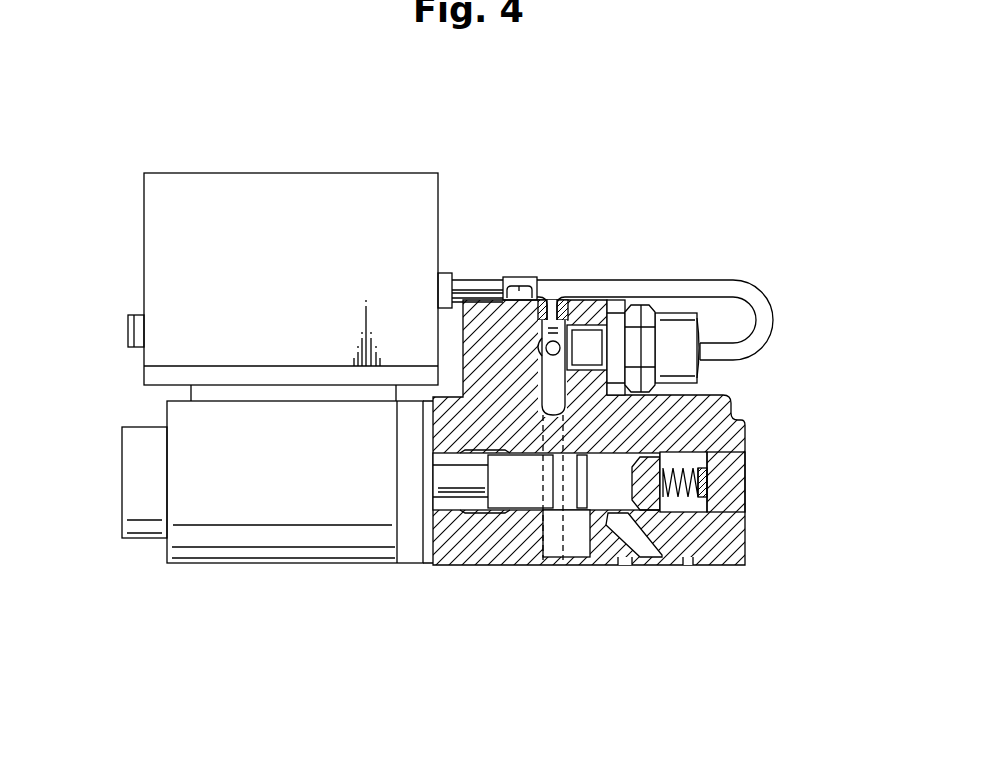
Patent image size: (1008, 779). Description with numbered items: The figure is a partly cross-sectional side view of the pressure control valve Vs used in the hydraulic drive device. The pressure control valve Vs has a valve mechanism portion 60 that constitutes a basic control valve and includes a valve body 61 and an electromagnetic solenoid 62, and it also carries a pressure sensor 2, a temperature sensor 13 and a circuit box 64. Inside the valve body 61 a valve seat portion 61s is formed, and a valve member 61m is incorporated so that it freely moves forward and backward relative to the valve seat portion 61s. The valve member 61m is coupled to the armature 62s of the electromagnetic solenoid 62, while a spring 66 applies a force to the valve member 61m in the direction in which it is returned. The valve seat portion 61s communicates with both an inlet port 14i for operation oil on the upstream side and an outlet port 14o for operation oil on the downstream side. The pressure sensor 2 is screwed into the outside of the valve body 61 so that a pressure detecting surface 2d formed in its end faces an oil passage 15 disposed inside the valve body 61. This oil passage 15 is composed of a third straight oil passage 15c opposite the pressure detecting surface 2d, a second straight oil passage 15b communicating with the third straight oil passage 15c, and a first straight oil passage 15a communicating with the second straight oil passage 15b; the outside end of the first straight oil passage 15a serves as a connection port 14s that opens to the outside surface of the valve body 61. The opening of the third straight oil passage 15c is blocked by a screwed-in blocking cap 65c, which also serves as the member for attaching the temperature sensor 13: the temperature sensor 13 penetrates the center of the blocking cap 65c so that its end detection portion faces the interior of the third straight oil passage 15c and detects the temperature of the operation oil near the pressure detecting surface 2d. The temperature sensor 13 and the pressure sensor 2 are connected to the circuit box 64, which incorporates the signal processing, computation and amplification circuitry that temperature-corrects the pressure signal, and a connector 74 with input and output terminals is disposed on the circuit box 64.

The pressure sensor 2 is at (603, 298).
The pressure detecting surface 2d is at (705, 393).
The temperature sensor 13 is at (557, 300).
The inlet port 14i is at (673, 567).
The outlet port 14o is at (588, 567).
The connection port 14s is at (563, 556).
The oil passage 15 is at (539, 405).
The first straight oil passage 15a is at (543, 556).
The second straight oil passage 15b is at (657, 323).
The third straight oil passage 15c is at (520, 475).
The valve mechanism portion 60 is at (736, 570).
The valve body 61 is at (746, 540).
The valve member 61m is at (693, 432).
The valve seat portion 61s is at (640, 567).
The electromagnetic solenoid 62 is at (302, 565).
The armature 62s is at (440, 568).
The circuit box 64 is at (254, 173).
The blocking cap 65c is at (568, 300).
The spring 66 is at (718, 478).
The connector 74 is at (133, 313).
The pressure control valve Vs is at (645, 193).